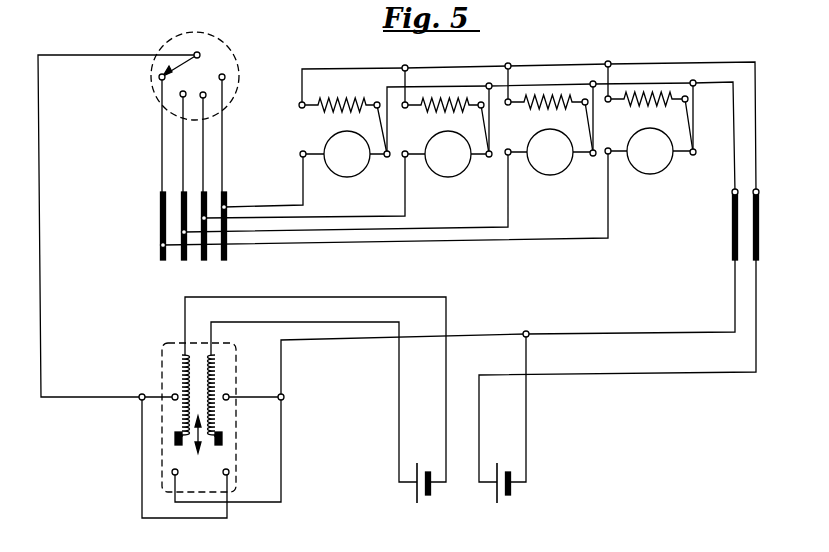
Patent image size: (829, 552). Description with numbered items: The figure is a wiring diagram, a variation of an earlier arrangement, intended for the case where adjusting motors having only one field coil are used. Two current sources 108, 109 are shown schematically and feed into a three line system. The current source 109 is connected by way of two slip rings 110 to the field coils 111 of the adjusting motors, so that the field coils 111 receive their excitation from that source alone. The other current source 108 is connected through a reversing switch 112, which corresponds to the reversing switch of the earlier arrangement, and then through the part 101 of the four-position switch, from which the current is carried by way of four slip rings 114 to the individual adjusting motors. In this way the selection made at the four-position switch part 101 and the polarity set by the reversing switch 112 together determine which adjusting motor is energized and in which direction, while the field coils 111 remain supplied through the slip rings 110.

The part of the four-position switch 101 is at (235, 52).
The current source 108 is at (416, 500).
The current source 109 is at (510, 495).
The slip rings 110 is at (733, 246).
The field coils 111 is at (660, 128).
The reversing switch 112 is at (162, 379).
The slip rings 114 is at (194, 241).